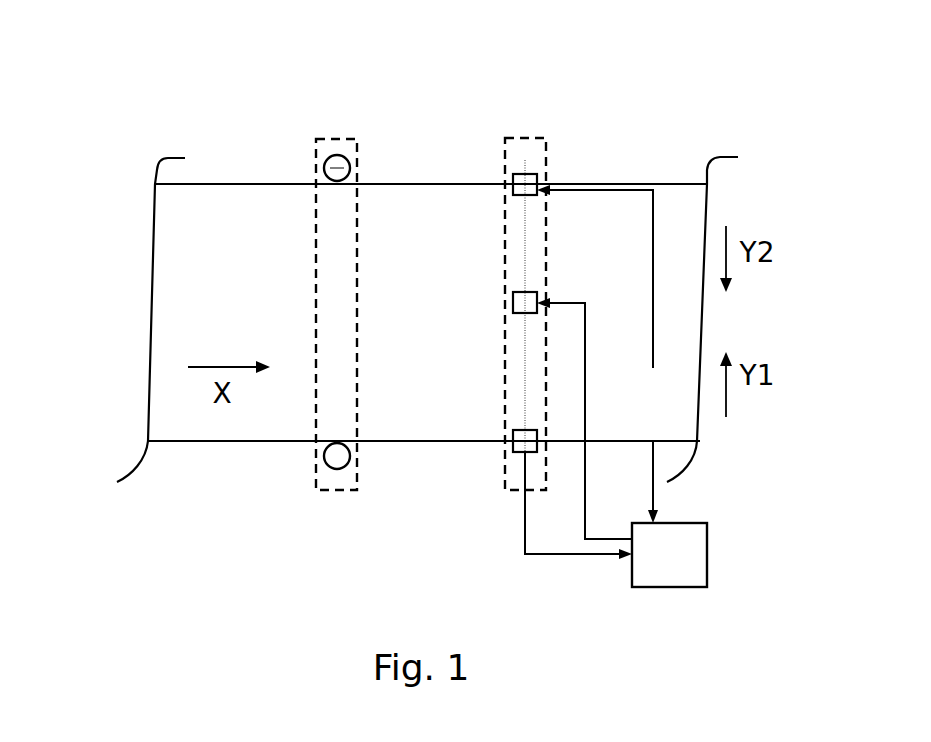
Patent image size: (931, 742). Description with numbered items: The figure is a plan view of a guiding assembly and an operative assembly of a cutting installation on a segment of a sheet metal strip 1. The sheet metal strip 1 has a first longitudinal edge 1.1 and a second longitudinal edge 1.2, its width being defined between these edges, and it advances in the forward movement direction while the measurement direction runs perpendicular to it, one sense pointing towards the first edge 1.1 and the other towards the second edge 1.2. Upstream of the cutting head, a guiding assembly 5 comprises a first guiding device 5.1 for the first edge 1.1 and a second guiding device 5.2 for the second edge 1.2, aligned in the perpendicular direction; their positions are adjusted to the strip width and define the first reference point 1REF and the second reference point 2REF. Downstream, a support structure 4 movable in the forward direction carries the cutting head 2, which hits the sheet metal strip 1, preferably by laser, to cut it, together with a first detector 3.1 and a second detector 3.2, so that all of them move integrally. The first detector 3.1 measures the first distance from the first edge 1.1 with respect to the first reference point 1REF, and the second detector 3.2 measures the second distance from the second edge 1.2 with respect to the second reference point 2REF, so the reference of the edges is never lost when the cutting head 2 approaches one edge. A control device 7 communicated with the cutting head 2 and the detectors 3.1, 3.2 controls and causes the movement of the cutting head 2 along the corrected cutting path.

The sheet metal strip 1 is at (232, 307).
The first longitudinal edge 1.1 is at (200, 184).
The second longitudinal edge 1.2 is at (157, 445).
The first reference point 1REF is at (337, 190).
The second reference point 2REF is at (335, 432).
The cutting head 2 is at (513, 303).
The first detector 3.1 is at (545, 182).
The second detector 3.2 is at (513, 442).
The support structure 4 is at (524, 138).
The guiding assembly 5 is at (357, 248).
The first guiding device 5.1 is at (350, 165).
The second guiding device 5.2 is at (340, 466).
The control device 7 is at (695, 555).